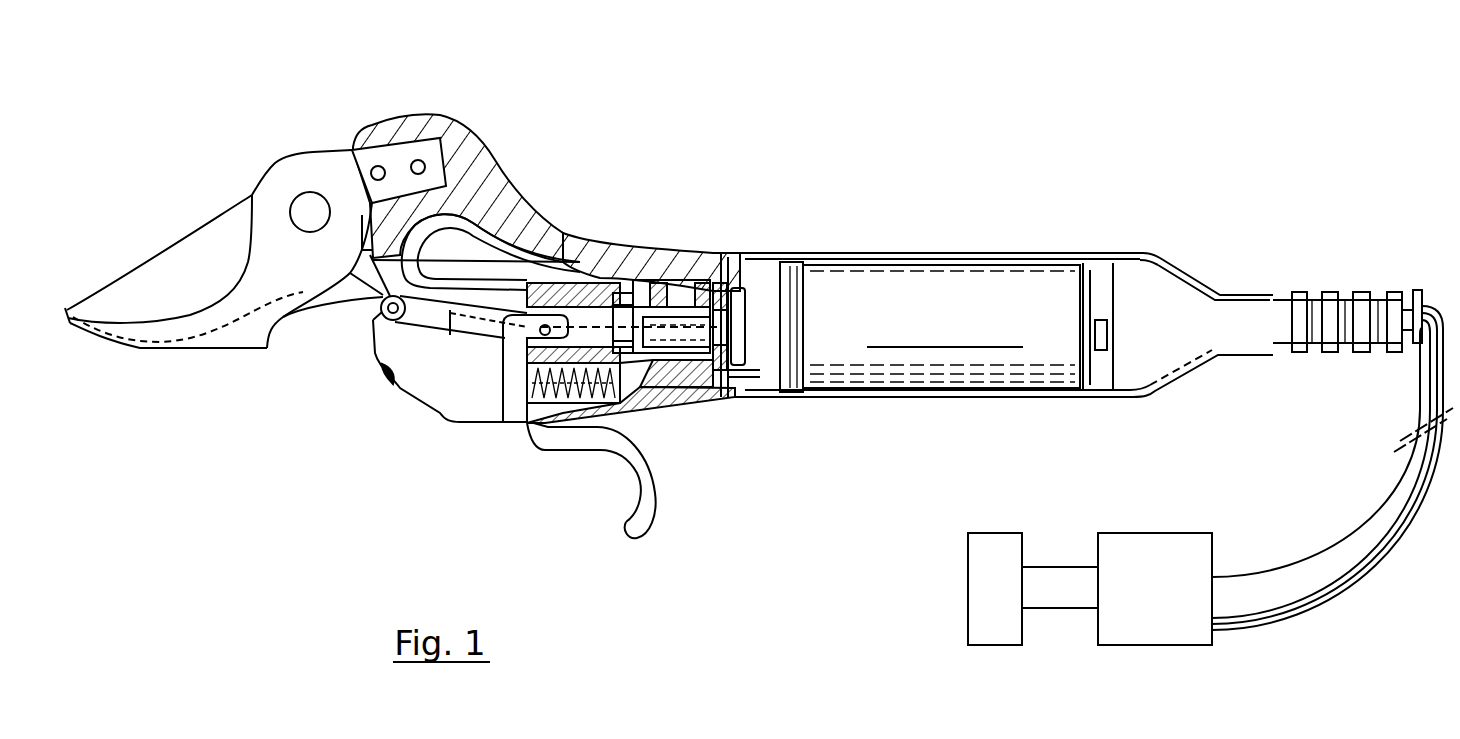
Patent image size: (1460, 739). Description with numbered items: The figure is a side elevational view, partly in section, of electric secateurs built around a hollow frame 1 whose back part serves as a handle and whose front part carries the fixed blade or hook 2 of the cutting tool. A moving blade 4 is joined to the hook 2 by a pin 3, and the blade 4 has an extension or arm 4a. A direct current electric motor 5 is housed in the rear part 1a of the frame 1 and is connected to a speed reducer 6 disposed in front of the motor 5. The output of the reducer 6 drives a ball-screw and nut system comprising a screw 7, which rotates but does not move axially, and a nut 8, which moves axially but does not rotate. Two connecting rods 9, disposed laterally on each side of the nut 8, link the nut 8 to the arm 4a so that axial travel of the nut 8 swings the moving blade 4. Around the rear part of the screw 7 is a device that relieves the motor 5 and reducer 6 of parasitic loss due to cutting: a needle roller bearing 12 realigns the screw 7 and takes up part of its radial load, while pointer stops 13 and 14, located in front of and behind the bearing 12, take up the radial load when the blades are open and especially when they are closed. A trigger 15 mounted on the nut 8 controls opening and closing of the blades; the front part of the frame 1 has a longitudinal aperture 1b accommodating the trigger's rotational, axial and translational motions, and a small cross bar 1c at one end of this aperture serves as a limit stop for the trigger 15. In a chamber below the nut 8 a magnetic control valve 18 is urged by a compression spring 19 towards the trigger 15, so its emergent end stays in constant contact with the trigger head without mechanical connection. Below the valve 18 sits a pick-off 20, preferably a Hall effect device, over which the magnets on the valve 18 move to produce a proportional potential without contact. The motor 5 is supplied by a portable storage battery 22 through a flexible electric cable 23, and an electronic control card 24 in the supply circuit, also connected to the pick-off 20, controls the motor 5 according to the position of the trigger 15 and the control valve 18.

The hollow frame 1 is at (703, 250).
The rear part of the frame 1a is at (899, 253).
The longitudinal aperture 1b is at (475, 420).
The cross bar 1c is at (383, 375).
The fixed blade or hook 2 is at (190, 330).
The pin 3 is at (314, 200).
The moving blade 4 is at (158, 288).
The extension or arm of the blade 4a is at (357, 297).
The direct current electric motor 5 is at (980, 290).
The speed reducer 6 is at (770, 317).
The screw 7 is at (560, 237).
The nut 8 is at (593, 280).
The connecting rods 9 is at (447, 313).
The needle roller bearing 12 is at (725, 260).
The pointer stop 13 is at (640, 287).
The pointer stop 14 is at (745, 273).
The trigger 15 is at (583, 447).
The magnetic control valve 18 is at (530, 410).
The compression spring 19 is at (640, 413).
The pick-off 20 is at (597, 455).
The portable storage battery 22 is at (1000, 627).
The flexible electric cable 23 is at (1330, 590).
The electronic control card 24 is at (1178, 628).